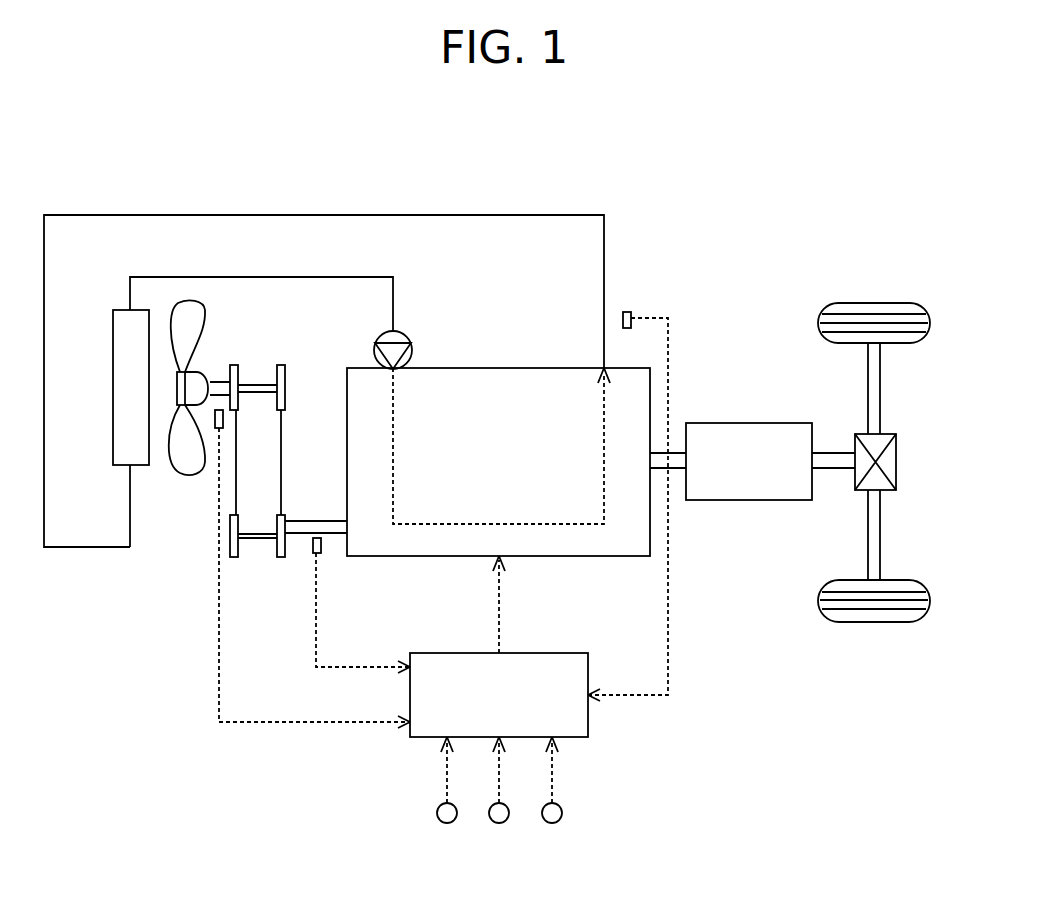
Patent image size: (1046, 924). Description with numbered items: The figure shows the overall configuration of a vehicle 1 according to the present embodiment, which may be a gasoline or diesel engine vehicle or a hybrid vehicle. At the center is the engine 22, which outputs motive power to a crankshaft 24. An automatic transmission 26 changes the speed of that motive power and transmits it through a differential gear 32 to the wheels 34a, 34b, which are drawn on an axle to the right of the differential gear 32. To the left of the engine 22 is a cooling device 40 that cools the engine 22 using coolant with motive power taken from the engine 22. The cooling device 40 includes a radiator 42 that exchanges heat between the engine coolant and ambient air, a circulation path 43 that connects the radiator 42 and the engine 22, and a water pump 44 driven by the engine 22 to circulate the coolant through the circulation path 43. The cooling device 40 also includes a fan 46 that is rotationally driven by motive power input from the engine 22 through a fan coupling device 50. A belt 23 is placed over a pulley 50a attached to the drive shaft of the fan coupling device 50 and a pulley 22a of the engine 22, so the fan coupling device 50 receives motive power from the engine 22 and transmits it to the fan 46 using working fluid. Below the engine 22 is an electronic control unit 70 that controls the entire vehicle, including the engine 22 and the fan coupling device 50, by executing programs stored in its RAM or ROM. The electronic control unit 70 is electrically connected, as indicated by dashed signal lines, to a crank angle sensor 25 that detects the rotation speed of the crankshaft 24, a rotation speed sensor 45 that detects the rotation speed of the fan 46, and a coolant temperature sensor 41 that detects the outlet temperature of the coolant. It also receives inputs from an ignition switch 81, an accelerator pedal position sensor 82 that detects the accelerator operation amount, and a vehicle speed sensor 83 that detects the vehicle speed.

The vehicle 1 is at (668, 228).
The engine 22 is at (484, 368).
The pulley 22a is at (283, 515).
The belt 23 is at (260, 536).
The crankshaft 24 is at (316, 521).
The crank angle sensor 25 is at (312, 553).
The automatic transmission 26 is at (738, 423).
The differential gear 32 is at (896, 458).
The wheel 34a is at (897, 622).
The wheel 34b is at (898, 303).
The cooling device 40 is at (340, 197).
The coolant temperature sensor 41 is at (628, 312).
The radiator 42 is at (116, 310).
The circulation path 43 is at (495, 215).
The water pump 44 is at (406, 336).
The rotation speed sensor 45 is at (216, 430).
The fan 46 is at (205, 308).
The fan coupling device 50 is at (258, 331).
The pulley 50a is at (234, 366).
The electronic control unit 70 is at (556, 653).
The ignition switch 81 is at (552, 823).
The accelerator pedal position sensor 82 is at (499, 823).
The vehicle speed sensor 83 is at (447, 823).